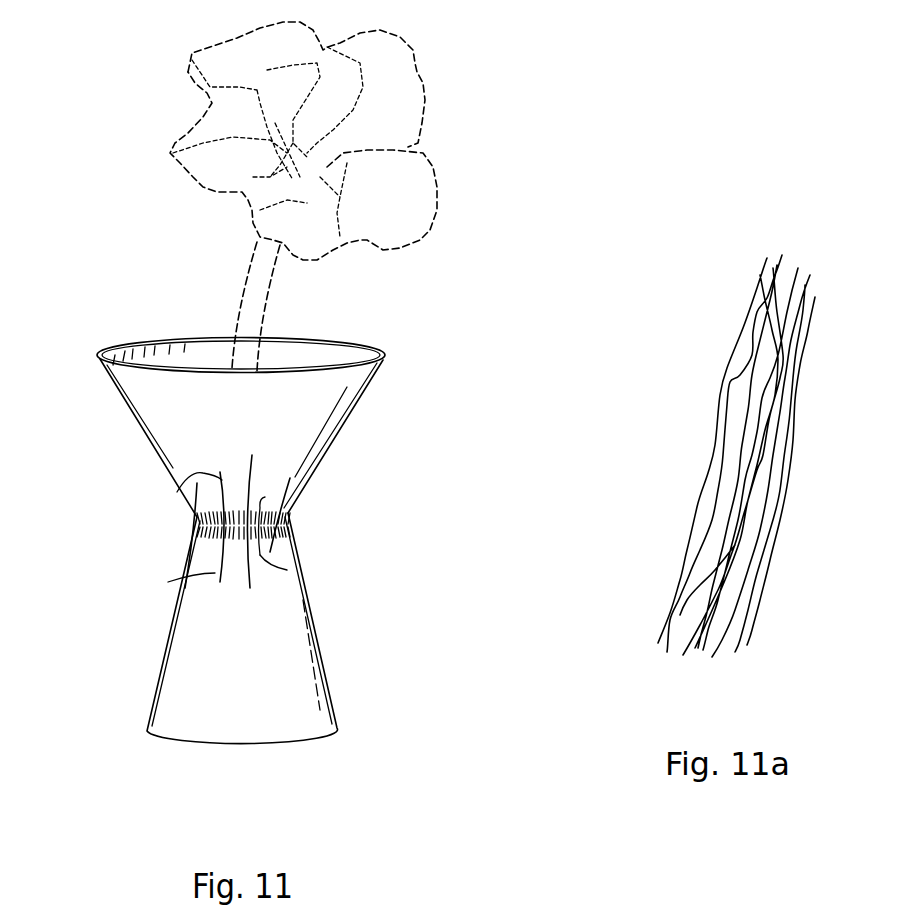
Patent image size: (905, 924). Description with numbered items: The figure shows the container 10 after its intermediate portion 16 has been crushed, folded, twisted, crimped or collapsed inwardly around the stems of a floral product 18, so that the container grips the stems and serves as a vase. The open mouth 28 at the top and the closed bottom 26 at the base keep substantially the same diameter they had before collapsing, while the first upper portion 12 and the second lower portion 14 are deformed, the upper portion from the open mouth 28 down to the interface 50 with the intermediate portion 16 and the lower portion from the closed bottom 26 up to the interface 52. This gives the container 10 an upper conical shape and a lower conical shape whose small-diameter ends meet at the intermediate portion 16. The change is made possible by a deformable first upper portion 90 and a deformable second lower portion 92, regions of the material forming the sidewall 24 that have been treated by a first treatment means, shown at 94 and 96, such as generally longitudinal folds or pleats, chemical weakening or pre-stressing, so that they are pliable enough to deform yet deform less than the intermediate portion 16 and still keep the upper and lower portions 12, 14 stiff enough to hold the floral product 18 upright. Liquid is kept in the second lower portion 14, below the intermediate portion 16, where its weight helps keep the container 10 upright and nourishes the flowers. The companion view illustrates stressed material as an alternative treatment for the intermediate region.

The container 10 is at (286, 547).
The first upper portion 12 is at (230, 438).
The second lower portion 14 is at (241, 658).
The intermediate portion 16 is at (239, 534).
The floral product 18 is at (200, 130).
The sidewall 24 is at (112, 388).
The closed bottom 26 is at (287, 743).
The open mouth 28 is at (355, 342).
The interface 50 is at (265, 497).
The interface 52 is at (287, 570).
The deformable first upper portion 90 is at (313, 410).
The deformable second lower portion 92 is at (293, 680).
The first treatment means 94 is at (177, 492).
The first treatment means 96 is at (168, 582).